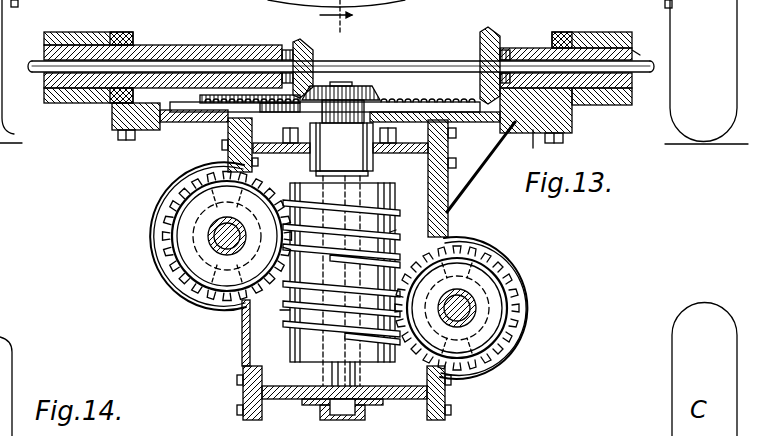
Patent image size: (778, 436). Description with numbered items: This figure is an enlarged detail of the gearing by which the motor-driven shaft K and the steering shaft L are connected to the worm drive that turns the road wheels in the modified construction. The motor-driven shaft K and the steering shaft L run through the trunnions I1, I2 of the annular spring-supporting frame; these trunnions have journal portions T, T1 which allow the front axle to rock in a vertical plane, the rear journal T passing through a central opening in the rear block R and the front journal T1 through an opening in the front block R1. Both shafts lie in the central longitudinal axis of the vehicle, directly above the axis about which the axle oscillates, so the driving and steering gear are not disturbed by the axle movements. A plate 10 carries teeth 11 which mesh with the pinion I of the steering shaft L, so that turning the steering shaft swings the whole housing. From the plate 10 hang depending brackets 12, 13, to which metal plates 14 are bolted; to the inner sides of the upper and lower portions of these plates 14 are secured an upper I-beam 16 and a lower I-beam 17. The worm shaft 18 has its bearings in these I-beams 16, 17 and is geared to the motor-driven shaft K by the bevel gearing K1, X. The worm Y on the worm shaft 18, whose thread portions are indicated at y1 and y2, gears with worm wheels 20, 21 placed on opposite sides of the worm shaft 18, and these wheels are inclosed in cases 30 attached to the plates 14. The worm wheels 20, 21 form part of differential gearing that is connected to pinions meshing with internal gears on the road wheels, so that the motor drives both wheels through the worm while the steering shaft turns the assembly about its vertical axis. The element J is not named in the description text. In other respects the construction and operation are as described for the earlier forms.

The motor-driven shaft K is at (152, 62).
The trunnion I1 is at (232, 56).
The bevel gear K1 is at (298, 44).
The rear journal T is at (44, 88).
The rear block R is at (90, 96).
The depending bracket 13 is at (228, 136).
The gear X is at (357, 87).
The teeth 11 is at (405, 101).
The plate 10 is at (200, 172).
The pinion I is at (480, 43).
The trunnion I2 is at (536, 50).
The front block R1 is at (603, 35).
The front journal T1 is at (630, 52).
The steering shaft L is at (648, 76).
The frame J is at (525, 149).
The depending bracket 12 is at (463, 203).
The metal plate 14 is at (438, 197).
The upper I-beam 16 is at (357, 153).
The worm shaft 18 is at (330, 177).
The lower I-beam 17 is at (287, 398).
The worm Y is at (303, 346).
The worm thread y1 is at (396, 230).
The worm thread y2 is at (272, 312).
The worm wheel 20 is at (165, 222).
The worm wheel 21 is at (522, 285).
The case 30 is at (165, 198).